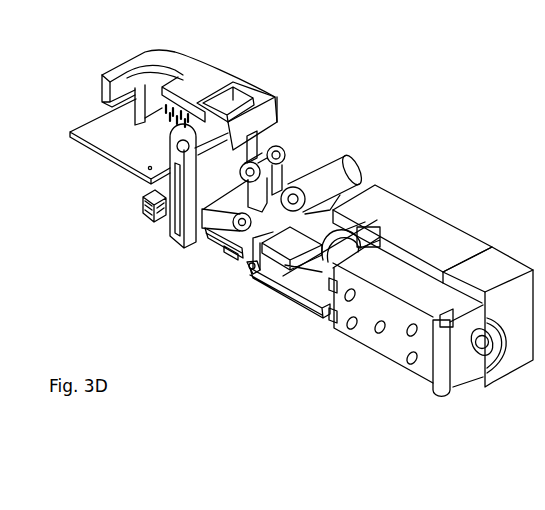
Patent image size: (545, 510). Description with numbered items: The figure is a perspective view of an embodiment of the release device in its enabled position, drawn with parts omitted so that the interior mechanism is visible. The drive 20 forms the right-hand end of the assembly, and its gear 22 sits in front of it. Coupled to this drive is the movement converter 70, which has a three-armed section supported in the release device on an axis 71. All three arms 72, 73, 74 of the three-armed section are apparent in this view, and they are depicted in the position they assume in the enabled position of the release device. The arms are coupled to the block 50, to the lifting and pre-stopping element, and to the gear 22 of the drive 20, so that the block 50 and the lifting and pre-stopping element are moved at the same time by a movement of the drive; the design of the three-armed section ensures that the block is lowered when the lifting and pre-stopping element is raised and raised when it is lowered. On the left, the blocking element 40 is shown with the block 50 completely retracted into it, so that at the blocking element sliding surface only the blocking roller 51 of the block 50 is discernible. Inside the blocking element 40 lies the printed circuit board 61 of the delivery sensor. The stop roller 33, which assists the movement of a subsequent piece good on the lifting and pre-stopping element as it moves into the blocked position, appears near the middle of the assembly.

The drive 20 is at (432, 290).
The gear 22 is at (298, 284).
The stop roller 33 is at (318, 186).
The blocking element 40 is at (203, 78).
The block 50 is at (184, 250).
The blocking roller 51 is at (240, 106).
The printed circuit board 61 is at (108, 143).
The movement converter 70 is at (310, 129).
The axis 71 is at (229, 253).
The arm 72 is at (282, 145).
The arm 73 is at (212, 236).
The arm 74 is at (253, 278).